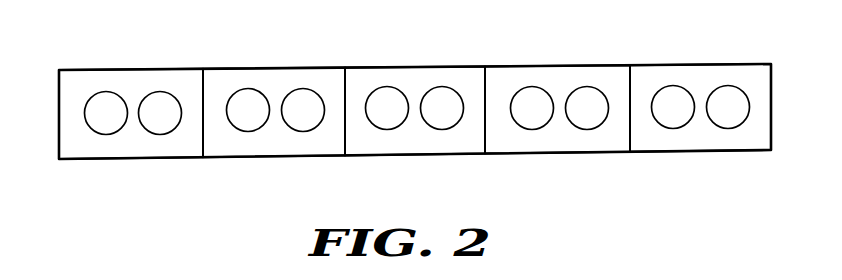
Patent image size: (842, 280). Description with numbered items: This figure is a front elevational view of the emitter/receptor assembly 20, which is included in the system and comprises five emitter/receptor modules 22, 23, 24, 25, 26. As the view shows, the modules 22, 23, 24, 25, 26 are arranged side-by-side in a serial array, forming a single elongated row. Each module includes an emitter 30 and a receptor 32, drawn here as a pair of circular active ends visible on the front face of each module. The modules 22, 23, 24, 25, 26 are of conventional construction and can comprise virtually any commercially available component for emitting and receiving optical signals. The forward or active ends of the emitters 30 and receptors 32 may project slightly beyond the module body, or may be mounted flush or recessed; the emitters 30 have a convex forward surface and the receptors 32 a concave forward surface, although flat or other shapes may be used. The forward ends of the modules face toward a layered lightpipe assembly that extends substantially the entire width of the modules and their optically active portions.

The emitter/receptor assembly 20 is at (65, 56).
The emitter/receptor module 22 is at (127, 77).
The emitter/receptor module 23 is at (270, 75).
The emitter/receptor module 24 is at (408, 75).
The emitter/receptor module 25 is at (553, 72).
The emitter/receptor module 26 is at (700, 70).
The emitter 30 is at (105, 131).
The receptor 32 is at (159, 131).